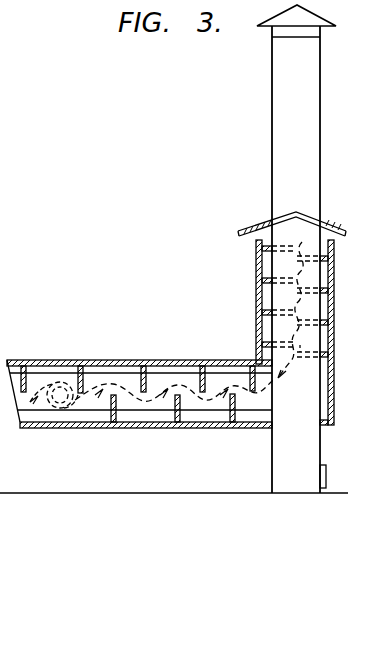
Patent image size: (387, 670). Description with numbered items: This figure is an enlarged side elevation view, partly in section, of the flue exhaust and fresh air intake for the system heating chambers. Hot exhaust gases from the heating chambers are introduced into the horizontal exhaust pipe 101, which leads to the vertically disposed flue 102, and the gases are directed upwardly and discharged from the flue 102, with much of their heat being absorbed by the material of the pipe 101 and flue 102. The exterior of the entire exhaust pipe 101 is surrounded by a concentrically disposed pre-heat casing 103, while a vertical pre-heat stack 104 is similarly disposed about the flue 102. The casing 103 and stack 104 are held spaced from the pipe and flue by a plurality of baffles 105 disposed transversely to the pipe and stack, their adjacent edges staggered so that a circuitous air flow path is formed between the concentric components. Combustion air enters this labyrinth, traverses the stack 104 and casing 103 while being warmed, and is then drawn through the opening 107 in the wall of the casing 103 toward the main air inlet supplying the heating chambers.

The horizontal exhaust pipe 101 is at (152, 388).
The flue 102 is at (308, 170).
The pre-heat casing 103 is at (205, 428).
The pre-heat stack 104 is at (335, 334).
The baffles 105 is at (84, 372).
The opening 107 is at (43, 410).